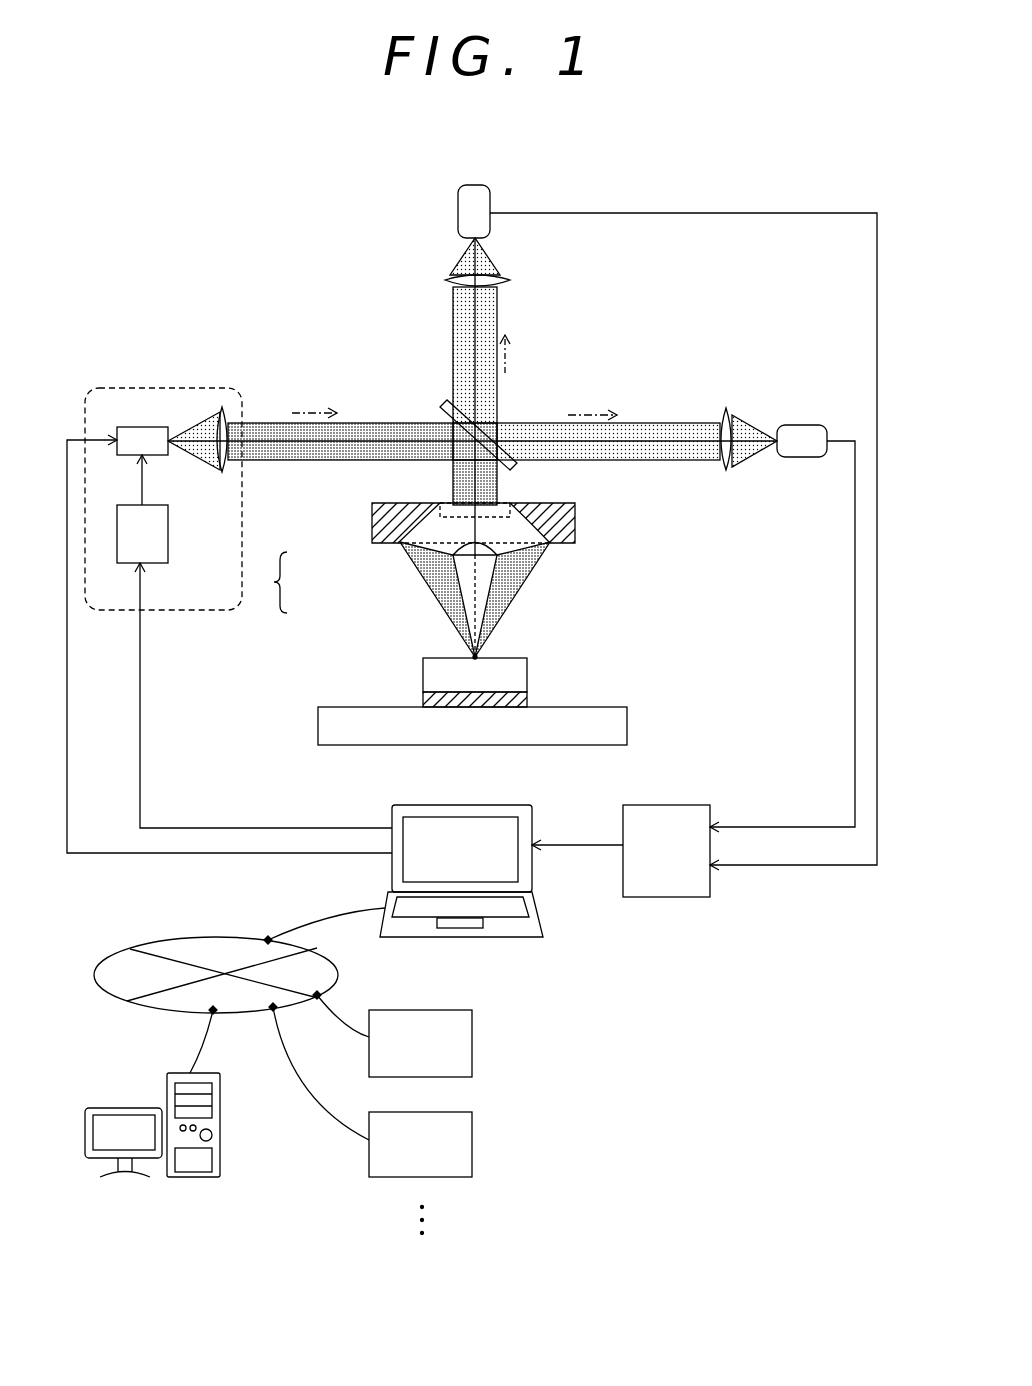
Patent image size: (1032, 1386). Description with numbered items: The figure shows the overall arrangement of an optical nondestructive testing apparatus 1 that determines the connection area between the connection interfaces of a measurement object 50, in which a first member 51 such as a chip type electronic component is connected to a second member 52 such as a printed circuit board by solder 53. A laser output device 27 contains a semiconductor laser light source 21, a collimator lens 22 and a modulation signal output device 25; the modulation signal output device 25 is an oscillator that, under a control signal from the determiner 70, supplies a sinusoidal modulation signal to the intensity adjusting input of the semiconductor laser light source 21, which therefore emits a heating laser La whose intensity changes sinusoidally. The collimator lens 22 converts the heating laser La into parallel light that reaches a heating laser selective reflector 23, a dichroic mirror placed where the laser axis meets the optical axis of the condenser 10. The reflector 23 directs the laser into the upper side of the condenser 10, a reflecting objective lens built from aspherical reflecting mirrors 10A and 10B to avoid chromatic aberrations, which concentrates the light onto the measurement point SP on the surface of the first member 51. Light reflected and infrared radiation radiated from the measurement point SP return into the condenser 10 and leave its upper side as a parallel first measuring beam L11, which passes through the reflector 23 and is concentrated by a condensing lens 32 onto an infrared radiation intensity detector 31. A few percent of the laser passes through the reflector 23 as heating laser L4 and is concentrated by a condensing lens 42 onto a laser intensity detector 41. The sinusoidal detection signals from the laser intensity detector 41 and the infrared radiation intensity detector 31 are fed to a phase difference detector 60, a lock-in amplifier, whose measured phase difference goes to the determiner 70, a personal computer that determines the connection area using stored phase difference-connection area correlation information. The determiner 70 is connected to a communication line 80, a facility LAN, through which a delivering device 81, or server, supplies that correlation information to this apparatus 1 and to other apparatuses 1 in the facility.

The optical nondestructive testing apparatus 1 is at (247, 217).
The condenser 10 is at (414, 558).
The aspherical reflecting mirror 10A is at (463, 563).
The aspherical reflecting mirror 10B is at (382, 548).
The semiconductor laser light source 21 is at (141, 425).
The collimator lens 22 is at (222, 405).
The heating laser selective reflector 23 is at (520, 468).
The modulation signal output device 25 is at (165, 566).
The laser output device 27 is at (176, 385).
The infrared radiation intensity detector 31 is at (452, 216).
The condensing lens 32 is at (440, 278).
The laser intensity detector 41 is at (797, 422).
The condensing lens 42 is at (730, 480).
The measurement object 50 is at (505, 668).
The first member 51 is at (535, 672).
The second member 52 is at (633, 728).
The solder 53 is at (533, 700).
The phase difference detector 60 is at (663, 800).
The determiner 70 is at (467, 800).
The communication line 80 is at (155, 942).
The delivering device 81 is at (225, 1125).
The heating laser La is at (418, 418).
The first measuring beam L11 is at (450, 353).
The heating laser L4 is at (680, 466).
The measurement point SP is at (462, 655).